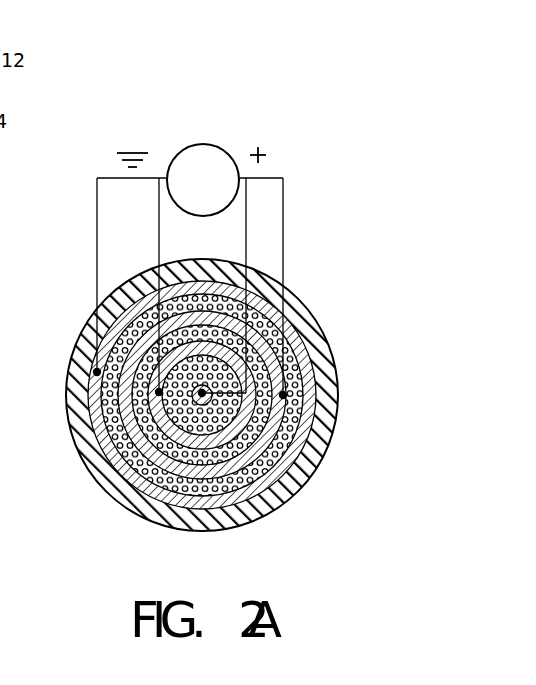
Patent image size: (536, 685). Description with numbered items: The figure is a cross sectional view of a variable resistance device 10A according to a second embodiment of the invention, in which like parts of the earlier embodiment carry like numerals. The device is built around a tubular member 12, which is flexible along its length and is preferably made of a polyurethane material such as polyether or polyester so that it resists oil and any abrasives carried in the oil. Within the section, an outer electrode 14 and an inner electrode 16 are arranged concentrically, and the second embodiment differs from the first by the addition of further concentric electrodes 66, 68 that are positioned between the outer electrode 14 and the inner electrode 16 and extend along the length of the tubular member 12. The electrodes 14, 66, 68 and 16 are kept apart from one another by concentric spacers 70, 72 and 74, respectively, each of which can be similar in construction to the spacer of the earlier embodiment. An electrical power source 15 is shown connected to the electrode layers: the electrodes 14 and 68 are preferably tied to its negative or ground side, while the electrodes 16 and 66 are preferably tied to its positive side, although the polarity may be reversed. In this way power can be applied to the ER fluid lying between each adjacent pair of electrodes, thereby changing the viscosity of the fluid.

The variable resistance device 10A is at (260, 97).
The tubular member 12 is at (320, 333).
The outer electrode 14 is at (313, 380).
The electrical power source 15 is at (191, 144).
The inner electrode 16 is at (110, 474).
The concentric electrode 66 is at (238, 440).
The concentric electrode 68 is at (287, 500).
The concentric spacer 70 is at (285, 452).
The concentric spacer 72 is at (293, 416).
The concentric spacer 74 is at (172, 407).